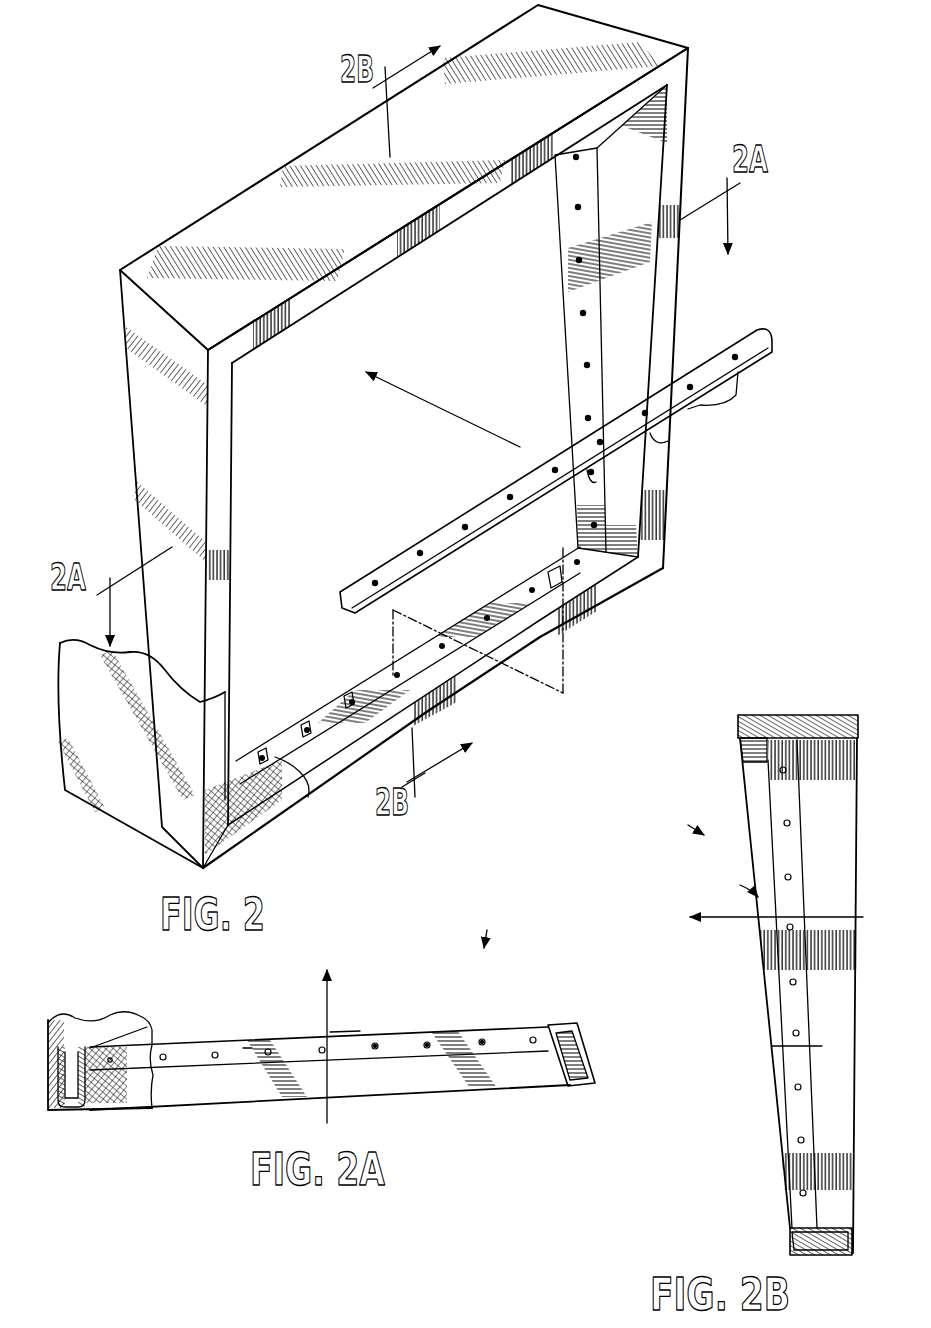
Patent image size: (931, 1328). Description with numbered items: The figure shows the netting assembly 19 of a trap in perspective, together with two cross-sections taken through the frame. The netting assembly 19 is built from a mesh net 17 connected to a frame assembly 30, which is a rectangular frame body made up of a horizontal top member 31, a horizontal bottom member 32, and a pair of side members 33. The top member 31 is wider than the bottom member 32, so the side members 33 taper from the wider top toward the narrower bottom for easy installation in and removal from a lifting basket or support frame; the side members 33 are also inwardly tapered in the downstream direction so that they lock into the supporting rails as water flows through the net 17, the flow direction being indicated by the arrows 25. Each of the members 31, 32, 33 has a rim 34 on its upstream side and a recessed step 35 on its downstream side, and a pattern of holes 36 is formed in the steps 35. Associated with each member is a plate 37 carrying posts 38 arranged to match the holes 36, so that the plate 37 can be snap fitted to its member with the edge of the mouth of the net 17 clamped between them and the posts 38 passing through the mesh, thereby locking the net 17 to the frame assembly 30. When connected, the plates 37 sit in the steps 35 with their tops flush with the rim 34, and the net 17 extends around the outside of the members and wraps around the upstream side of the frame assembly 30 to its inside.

In FIG. 2, the mesh net 17 is at (112, 740).
In FIG. 2A, the mesh net 17 is at (96, 1026).
In FIG. 2, the netting assembly 19 is at (449, 436).
In FIG. 2A, the netting assembly 19 is at (493, 925).
In FIG. 2B, the netting assembly 19 is at (683, 822).
In FIG. 2, the flow direction arrows 25 is at (428, 403).
In FIG. 2A, the flow direction arrows 25 is at (322, 1026).
In FIG. 2B, the flow direction arrows 25 is at (822, 915).
In FIG. 2, the frame assembly 30 is at (692, 46).
In FIG. 2A, the frame assembly 30 is at (462, 1094).
In FIG. 2B, the frame assembly 30 is at (735, 884).
In FIG. 2, the top member 31 is at (216, 224).
In FIG. 2B, the top member 31 is at (808, 713).
In FIG. 2, the bottom member 32 is at (622, 590).
In FIG. 2A, the bottom member 32 is at (355, 1030).
In FIG. 2B, the bottom member 32 is at (815, 1258).
In FIG. 2, the side members 33 is at (215, 482).
In FIG. 2A, the side members 33 is at (68, 1112).
In FIG. 2B, the side members 33 is at (778, 990).
In FIG. 2, the rim 34 is at (536, 598).
In FIG. 2A, the rim 34 is at (213, 1086).
In FIG. 2B, the rim 34 is at (783, 1052).
In FIG. 2, the recessed step 35 is at (551, 585).
In FIG. 2A, the recessed step 35 is at (246, 1047).
In FIG. 2, the holes 36 is at (345, 700).
In FIG. 2A, the holes 36 is at (480, 1041).
In FIG. 2, the plate 37 is at (750, 348).
In FIG. 2A, the plate 37 is at (175, 1048).
In FIG. 2B, the plate 37 is at (756, 768).
In FIG. 2, the posts 38 is at (718, 406).
In FIG. 2A, the posts 38 is at (62, 1044).
In FIG. 2B, the posts 38 is at (778, 713).